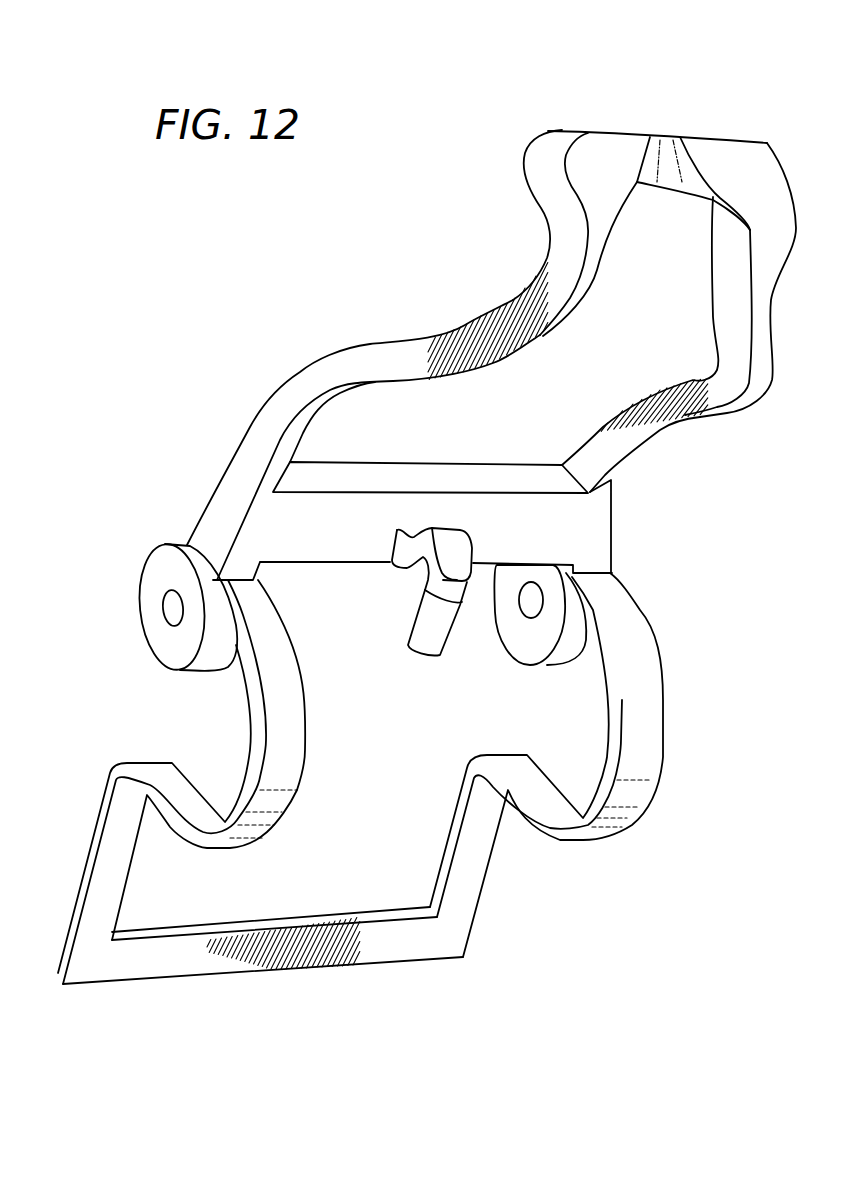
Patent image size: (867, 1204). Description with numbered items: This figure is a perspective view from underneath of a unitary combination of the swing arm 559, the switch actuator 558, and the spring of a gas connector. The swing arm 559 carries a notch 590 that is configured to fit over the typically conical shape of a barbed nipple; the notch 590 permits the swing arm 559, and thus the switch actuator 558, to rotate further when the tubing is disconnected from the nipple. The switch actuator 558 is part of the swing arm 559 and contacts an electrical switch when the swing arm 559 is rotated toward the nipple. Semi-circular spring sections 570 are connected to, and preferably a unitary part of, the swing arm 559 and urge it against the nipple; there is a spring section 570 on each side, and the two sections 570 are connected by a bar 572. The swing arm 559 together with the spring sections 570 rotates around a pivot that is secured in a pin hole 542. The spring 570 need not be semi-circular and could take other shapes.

The notch 590 is at (672, 157).
The swing arm 559 is at (300, 513).
The pin hole 542 is at (167, 608).
The switch actuator 558 is at (413, 618).
The semi-circular spring section 570 is at (150, 760).
The bar 572 is at (308, 950).